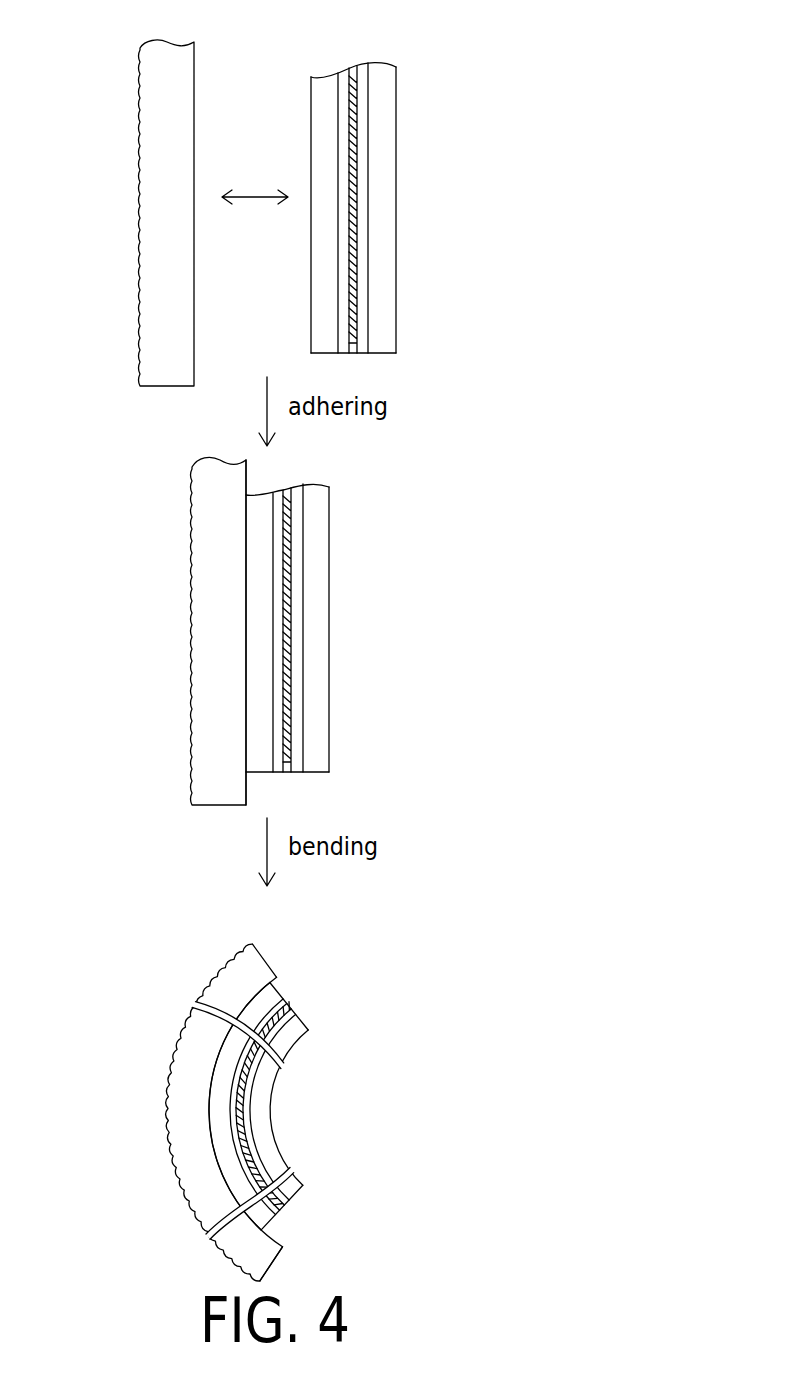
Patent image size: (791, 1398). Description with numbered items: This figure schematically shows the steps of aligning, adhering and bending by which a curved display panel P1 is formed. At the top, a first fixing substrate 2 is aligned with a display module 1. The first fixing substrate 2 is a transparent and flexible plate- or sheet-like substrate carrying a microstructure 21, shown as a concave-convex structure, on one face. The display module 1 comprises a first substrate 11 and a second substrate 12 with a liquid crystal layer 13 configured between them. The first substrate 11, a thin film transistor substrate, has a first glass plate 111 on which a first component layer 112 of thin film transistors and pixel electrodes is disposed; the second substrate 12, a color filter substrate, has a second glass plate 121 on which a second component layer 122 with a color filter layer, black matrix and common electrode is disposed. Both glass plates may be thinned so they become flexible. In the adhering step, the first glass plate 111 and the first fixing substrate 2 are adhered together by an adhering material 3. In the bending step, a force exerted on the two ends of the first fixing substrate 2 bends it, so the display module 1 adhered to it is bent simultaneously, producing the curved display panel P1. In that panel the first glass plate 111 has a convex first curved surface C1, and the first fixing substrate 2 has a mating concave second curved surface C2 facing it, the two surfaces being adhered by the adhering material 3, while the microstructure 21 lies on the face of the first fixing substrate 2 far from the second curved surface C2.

The display module 1 is at (364, 615).
The first fixing substrate 2 is at (186, 660).
The adhering material 3 is at (256, 676).
The first substrate 11 is at (364, 649).
The second substrate 12 is at (365, 623).
The liquid crystal layer 13 is at (284, 1012).
The microstructure 21 is at (180, 1097).
The first glass plate 111 is at (326, 190).
The first component layer 112 is at (344, 153).
The second glass plate 121 is at (322, 744).
The second component layer 122 is at (288, 1016).
The first curved surface C1 is at (223, 1155).
The second curved surface C2 is at (281, 1237).
The curved display panel P1 is at (352, 1182).